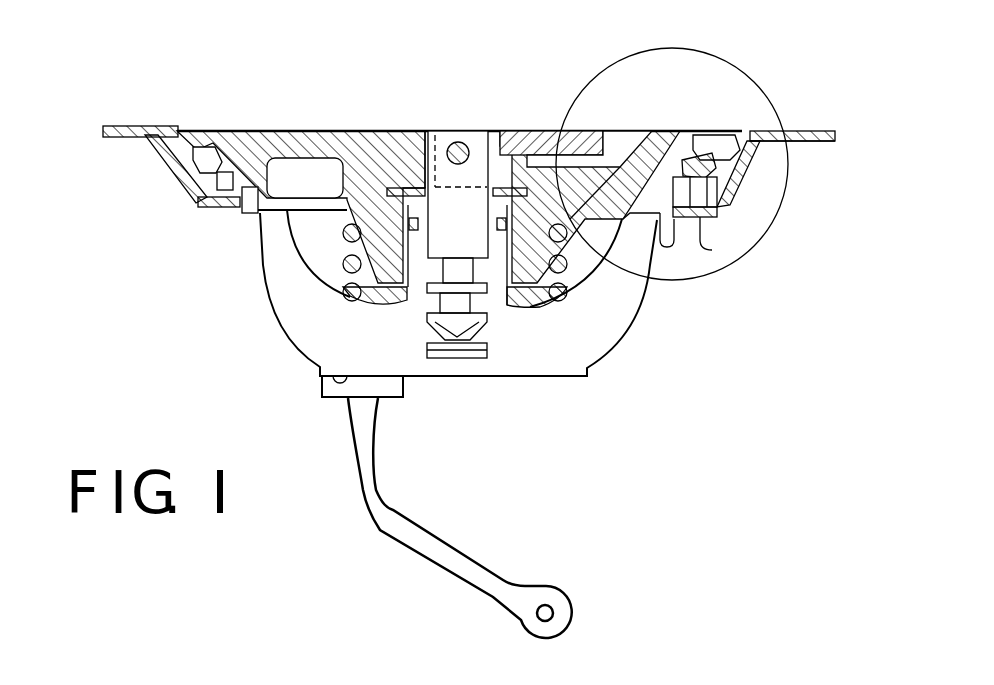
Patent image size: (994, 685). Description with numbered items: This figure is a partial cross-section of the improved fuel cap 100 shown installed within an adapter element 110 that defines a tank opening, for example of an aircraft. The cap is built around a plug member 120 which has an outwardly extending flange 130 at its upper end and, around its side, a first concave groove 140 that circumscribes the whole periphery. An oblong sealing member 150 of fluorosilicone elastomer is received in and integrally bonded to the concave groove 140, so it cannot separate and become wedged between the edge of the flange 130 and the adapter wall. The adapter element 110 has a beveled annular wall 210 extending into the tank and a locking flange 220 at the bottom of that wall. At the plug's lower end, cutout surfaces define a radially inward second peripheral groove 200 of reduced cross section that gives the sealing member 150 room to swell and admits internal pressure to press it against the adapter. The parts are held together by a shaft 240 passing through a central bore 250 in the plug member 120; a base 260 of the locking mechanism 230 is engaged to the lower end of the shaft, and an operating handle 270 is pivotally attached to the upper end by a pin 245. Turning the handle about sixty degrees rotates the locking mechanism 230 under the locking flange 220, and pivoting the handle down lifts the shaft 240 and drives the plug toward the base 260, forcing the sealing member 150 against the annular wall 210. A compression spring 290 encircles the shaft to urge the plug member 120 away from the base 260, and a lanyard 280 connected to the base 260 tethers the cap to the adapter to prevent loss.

The fuel cap 100 is at (545, 463).
The adapter element 110 is at (130, 127).
The plug member 120 is at (316, 88).
The outwardly extending flange 130 is at (226, 131).
The first concave groove 140 is at (692, 131).
The sealing member 150 is at (193, 176).
The second peripheral groove 200 is at (735, 248).
The annular wall 210 is at (762, 145).
The locking flange 220 is at (712, 250).
The locking mechanism 230 is at (660, 293).
The shaft 240 is at (452, 131).
The pin 245 is at (457, 142).
The central bore 250 is at (427, 132).
The base 260 is at (607, 337).
The operating handle 270 is at (515, 131).
The lanyard 280 is at (367, 475).
The compression spring 290 is at (325, 250).